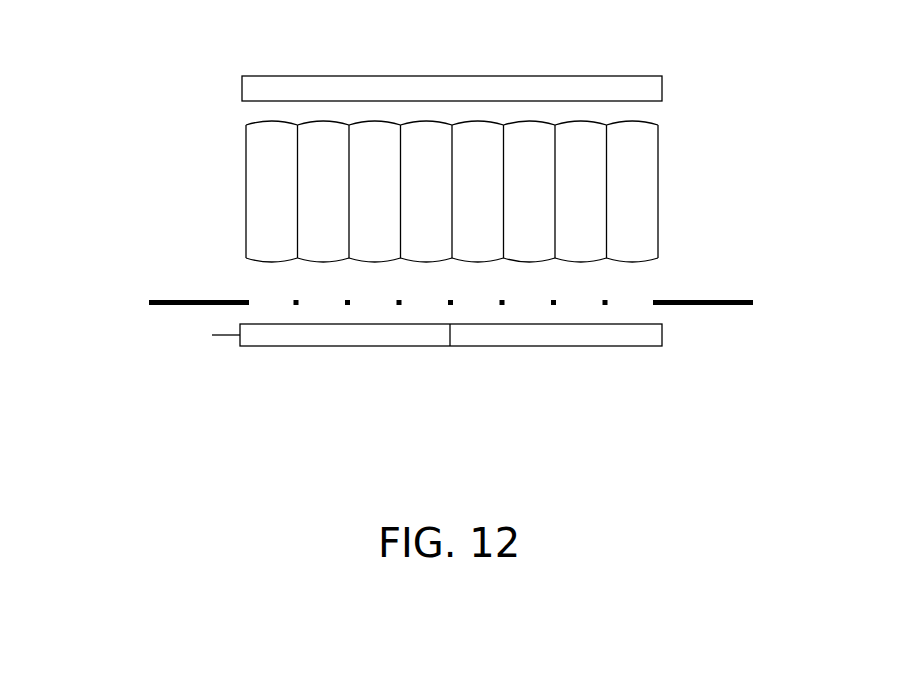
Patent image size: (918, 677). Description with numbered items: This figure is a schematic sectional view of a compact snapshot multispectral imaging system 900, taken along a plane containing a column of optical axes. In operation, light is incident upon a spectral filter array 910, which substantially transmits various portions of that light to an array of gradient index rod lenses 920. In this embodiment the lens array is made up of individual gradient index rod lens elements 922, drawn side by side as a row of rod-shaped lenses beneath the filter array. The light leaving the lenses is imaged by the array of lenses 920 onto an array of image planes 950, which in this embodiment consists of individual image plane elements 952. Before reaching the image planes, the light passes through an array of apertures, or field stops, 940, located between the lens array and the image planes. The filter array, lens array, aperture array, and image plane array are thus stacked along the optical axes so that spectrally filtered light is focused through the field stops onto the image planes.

The compact snapshot multispectral imaging system 900 is at (152, 57).
The spectral filter array 910 is at (450, 77).
The array of gradient index rod lenses 920 is at (469, 190).
The gradient index rod lens element 922 is at (272, 193).
The array of apertures (field stops) 940 is at (765, 282).
The array of image planes 950 is at (680, 359).
The image plane element 952 is at (212, 335).